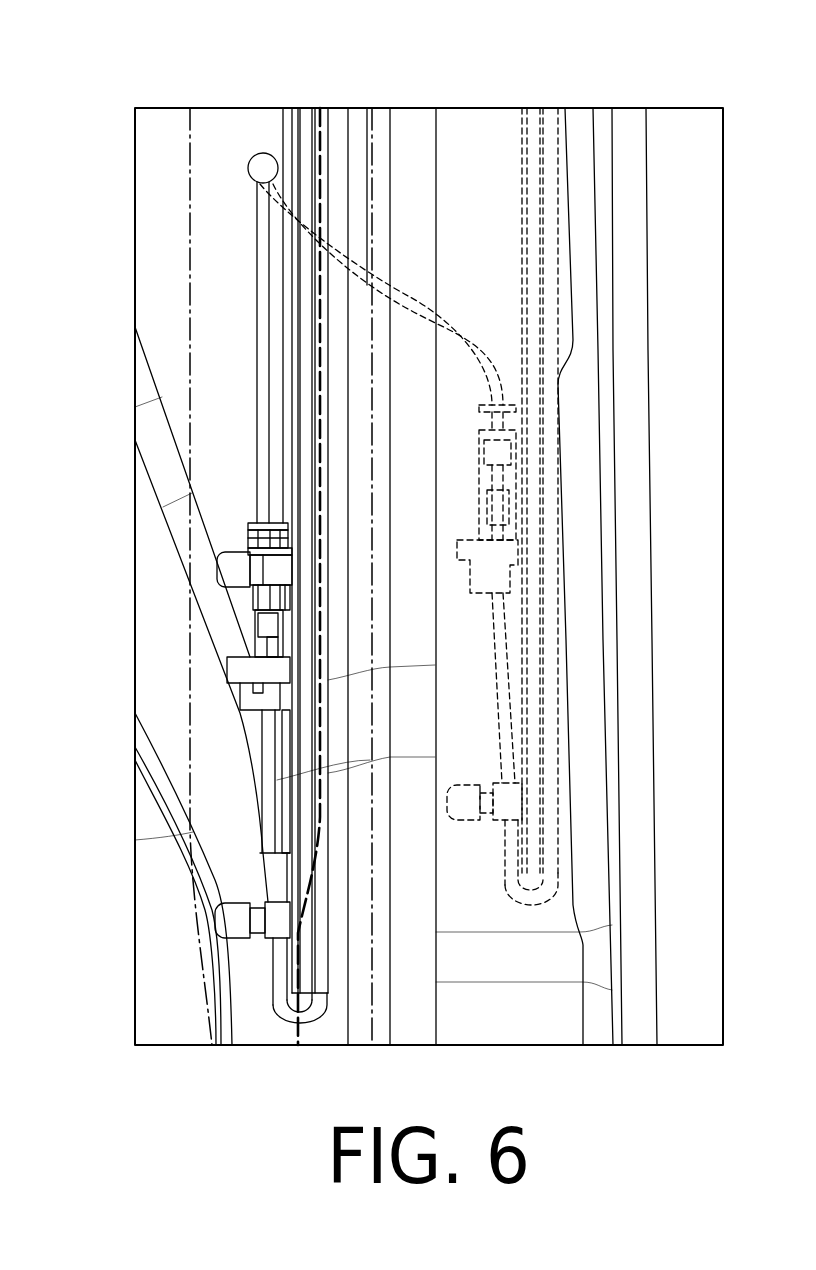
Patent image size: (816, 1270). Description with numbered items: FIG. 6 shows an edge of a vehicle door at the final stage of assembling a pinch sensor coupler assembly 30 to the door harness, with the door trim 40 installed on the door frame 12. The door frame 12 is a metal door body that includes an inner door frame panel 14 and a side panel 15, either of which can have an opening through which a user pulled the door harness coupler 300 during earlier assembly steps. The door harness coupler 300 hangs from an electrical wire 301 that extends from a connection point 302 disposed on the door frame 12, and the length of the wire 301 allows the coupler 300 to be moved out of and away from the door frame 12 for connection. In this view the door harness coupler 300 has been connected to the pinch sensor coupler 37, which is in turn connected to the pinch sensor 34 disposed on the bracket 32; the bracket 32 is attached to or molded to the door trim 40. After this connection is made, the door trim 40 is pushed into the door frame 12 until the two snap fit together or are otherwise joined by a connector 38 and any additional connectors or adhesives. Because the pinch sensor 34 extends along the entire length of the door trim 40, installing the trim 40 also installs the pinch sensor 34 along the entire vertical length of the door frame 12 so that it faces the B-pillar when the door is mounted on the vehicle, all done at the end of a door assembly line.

The door frame 12 is at (202, 83).
The inner door frame panel 14 is at (327, 163).
The side panel 15 is at (167, 343).
The pinch sensor coupler assembly 30 is at (343, 662).
The bracket 32 is at (314, 131).
The pinch sensor 34 is at (293, 131).
The pinch sensor coupler 37 is at (248, 702).
The connector 38 is at (235, 903).
The door trim 40 is at (372, 843).
The door harness coupler 300 is at (258, 545).
The electrical wire 301 is at (257, 317).
The connection point 302 is at (252, 160).